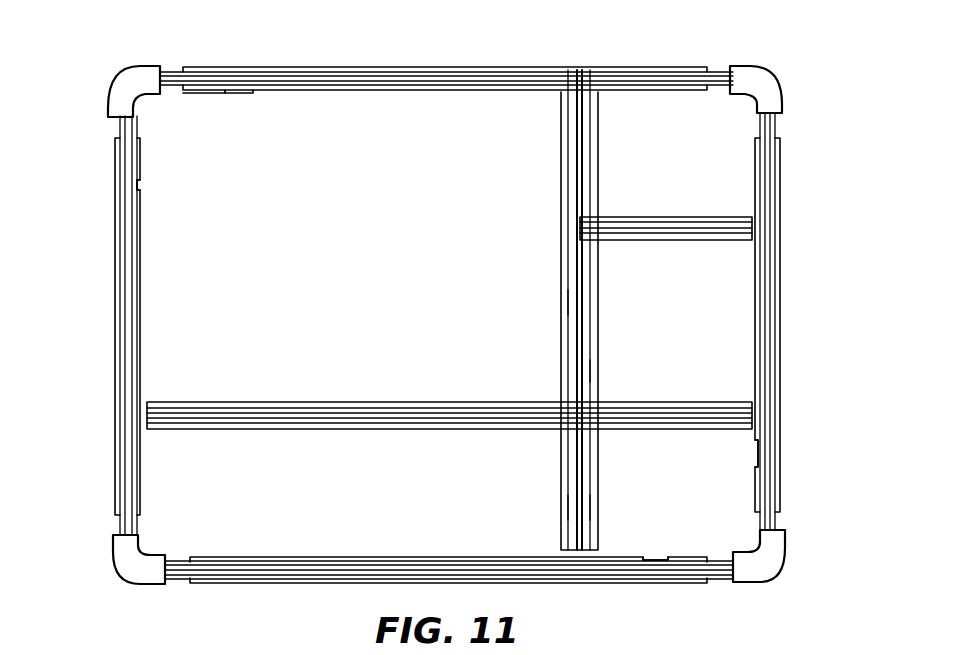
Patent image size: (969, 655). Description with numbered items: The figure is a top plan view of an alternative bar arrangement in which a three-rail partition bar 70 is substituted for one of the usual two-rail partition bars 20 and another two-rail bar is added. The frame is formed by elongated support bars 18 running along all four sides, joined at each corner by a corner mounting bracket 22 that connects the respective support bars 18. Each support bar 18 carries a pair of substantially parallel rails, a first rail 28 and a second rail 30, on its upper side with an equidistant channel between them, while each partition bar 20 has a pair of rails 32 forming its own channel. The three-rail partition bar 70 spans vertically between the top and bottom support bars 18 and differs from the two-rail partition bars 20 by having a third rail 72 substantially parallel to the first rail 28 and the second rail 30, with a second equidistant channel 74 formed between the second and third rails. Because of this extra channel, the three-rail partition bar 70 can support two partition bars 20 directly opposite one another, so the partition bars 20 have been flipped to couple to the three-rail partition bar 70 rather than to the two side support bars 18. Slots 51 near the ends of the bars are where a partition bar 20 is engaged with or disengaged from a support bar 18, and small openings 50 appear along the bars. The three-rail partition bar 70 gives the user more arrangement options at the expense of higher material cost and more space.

The support bar 18 is at (465, 66).
The partition bar 20 is at (683, 216).
The corner mounting bracket 22 is at (122, 80).
The first rail 28 is at (568, 302).
The second rail 30 is at (578, 342).
The rails 32 is at (572, 507).
The notch / clip opening 50 is at (237, 93).
The slot 51 is at (655, 583).
The three-rail partition bar 70 is at (578, 165).
The third rail 72 is at (588, 370).
The second equidistant channel 74 is at (588, 507).